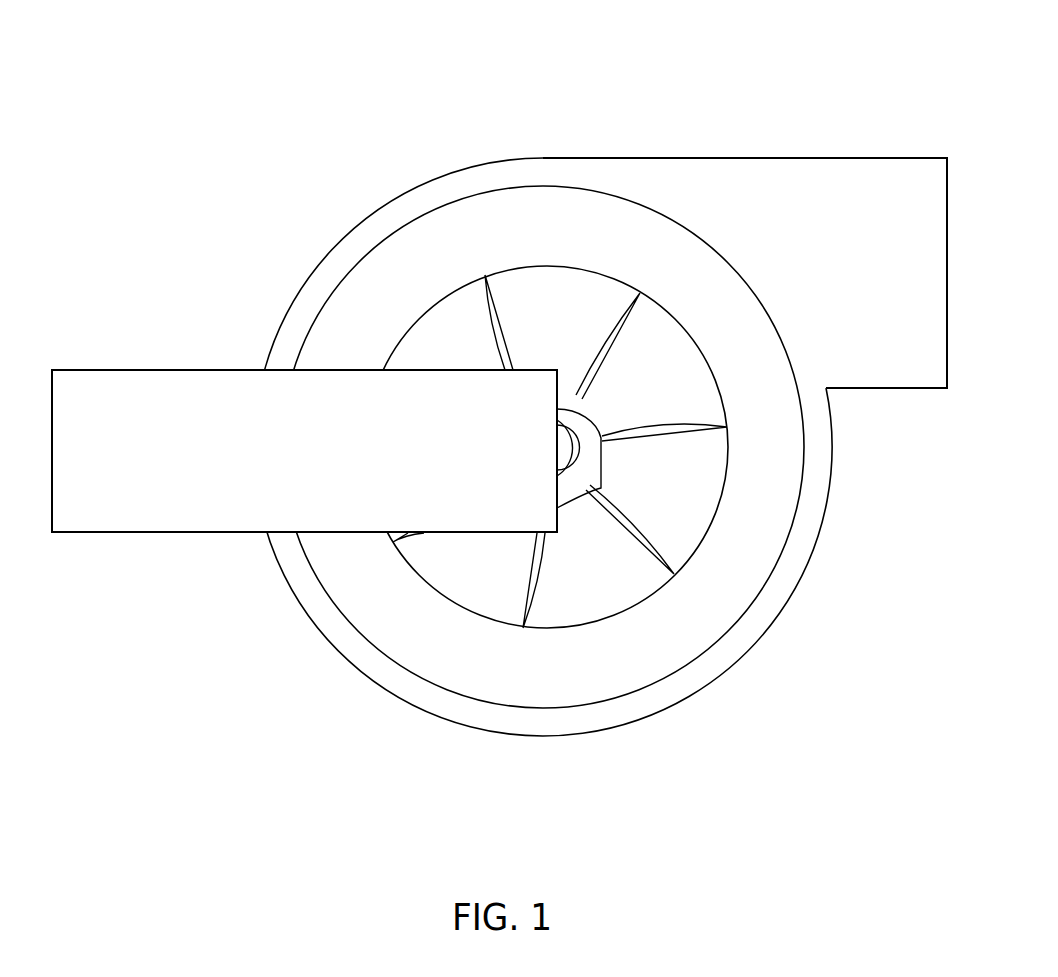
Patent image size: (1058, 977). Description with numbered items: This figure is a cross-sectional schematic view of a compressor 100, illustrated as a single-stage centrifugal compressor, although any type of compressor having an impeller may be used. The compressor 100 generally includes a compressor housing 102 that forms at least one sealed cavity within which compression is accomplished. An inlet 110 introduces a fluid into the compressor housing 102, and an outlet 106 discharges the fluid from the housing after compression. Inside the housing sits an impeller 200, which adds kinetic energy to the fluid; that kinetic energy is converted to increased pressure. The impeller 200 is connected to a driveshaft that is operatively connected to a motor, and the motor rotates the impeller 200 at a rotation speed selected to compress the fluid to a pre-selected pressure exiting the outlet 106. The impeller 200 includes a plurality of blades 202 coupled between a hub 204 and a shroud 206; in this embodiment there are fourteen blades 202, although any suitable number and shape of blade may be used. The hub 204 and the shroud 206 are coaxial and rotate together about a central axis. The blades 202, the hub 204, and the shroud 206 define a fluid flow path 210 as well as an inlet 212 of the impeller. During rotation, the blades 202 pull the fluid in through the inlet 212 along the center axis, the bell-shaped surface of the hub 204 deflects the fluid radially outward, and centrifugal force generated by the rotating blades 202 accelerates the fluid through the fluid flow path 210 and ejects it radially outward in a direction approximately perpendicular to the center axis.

The compressor 100 is at (499, 386).
The compressor housing 102 is at (600, 412).
The outlet 106 is at (888, 190).
The inlet 110 is at (153, 392).
The impeller 200 is at (470, 438).
The blades 202 is at (575, 303).
The hub 204 is at (587, 443).
The shroud 206 is at (535, 200).
The fluid flow path 210 is at (673, 557).
The inlet 212 is at (572, 590).